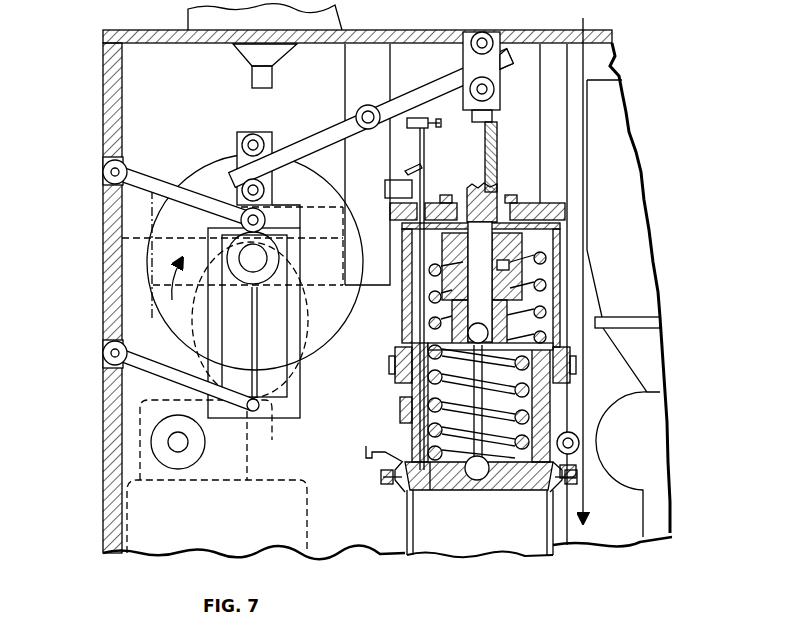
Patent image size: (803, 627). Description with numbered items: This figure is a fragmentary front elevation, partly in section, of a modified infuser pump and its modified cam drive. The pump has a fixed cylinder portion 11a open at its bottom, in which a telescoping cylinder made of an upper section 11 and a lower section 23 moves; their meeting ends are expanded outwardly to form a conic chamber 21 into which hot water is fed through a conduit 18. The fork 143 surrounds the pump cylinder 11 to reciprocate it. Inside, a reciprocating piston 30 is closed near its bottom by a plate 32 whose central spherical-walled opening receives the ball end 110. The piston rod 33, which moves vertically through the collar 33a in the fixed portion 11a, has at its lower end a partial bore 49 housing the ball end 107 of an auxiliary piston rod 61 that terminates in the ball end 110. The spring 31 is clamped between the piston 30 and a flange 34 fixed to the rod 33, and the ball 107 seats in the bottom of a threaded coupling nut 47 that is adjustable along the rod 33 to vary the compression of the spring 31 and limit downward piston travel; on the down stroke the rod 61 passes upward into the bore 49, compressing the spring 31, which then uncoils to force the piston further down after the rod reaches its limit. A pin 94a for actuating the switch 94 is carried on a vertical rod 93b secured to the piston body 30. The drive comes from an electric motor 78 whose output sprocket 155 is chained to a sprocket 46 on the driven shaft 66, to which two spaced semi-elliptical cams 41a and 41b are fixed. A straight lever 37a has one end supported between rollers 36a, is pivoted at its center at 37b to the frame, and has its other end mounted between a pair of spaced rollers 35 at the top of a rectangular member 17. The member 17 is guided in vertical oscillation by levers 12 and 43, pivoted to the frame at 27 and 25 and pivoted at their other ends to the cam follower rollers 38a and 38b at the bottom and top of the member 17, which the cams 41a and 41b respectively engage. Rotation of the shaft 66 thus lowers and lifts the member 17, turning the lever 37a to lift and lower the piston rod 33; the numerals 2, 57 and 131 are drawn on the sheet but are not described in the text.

The housing top 2 is at (330, 30).
The upper section 11 is at (398, 312).
The fixed cylinder portion 11a is at (402, 238).
The lever 12 is at (162, 386).
The rectangular shaped member 17 is at (300, 385).
The conduit 18 is at (364, 451).
The conic chamber 21 is at (403, 492).
The lower section 23 is at (406, 531).
The pivot 25 is at (120, 165).
The pivot 27 is at (104, 356).
The reciprocating piston 30 is at (428, 490).
The spring 31 is at (520, 314).
The plate 32 is at (512, 490).
The piston rod 33 is at (494, 158).
The collar 33a is at (512, 196).
The flange 34 is at (518, 246).
The spaced rollers 35 is at (254, 136).
The rollers 36a is at (477, 33).
The straight lever 37a is at (296, 140).
The pivot 37b is at (368, 105).
The cam follower roller 38a is at (258, 408).
The cam follower roller 38b is at (266, 219).
The semi-elliptical cam 41a is at (186, 348).
The semi-elliptical cam 41b is at (210, 340).
The lever 43 is at (161, 180).
The sprocket 46 is at (230, 150).
The threaded coupling nut 47 is at (505, 328).
The partial bore 49 is at (468, 196).
The duct 57 is at (634, 269).
The auxiliary piston rod 61 is at (478, 413).
The driven shaft 66 is at (262, 263).
The electric motor 78 is at (287, 478).
The vertical rod 93b is at (440, 158).
The switch 94 is at (388, 190).
The pin 94a is at (418, 112).
The ball end 107 is at (470, 330).
The ball end 110 is at (472, 478).
The nut 131 is at (400, 410).
The fork 143 is at (398, 355).
The output sprocket 155 is at (190, 452).